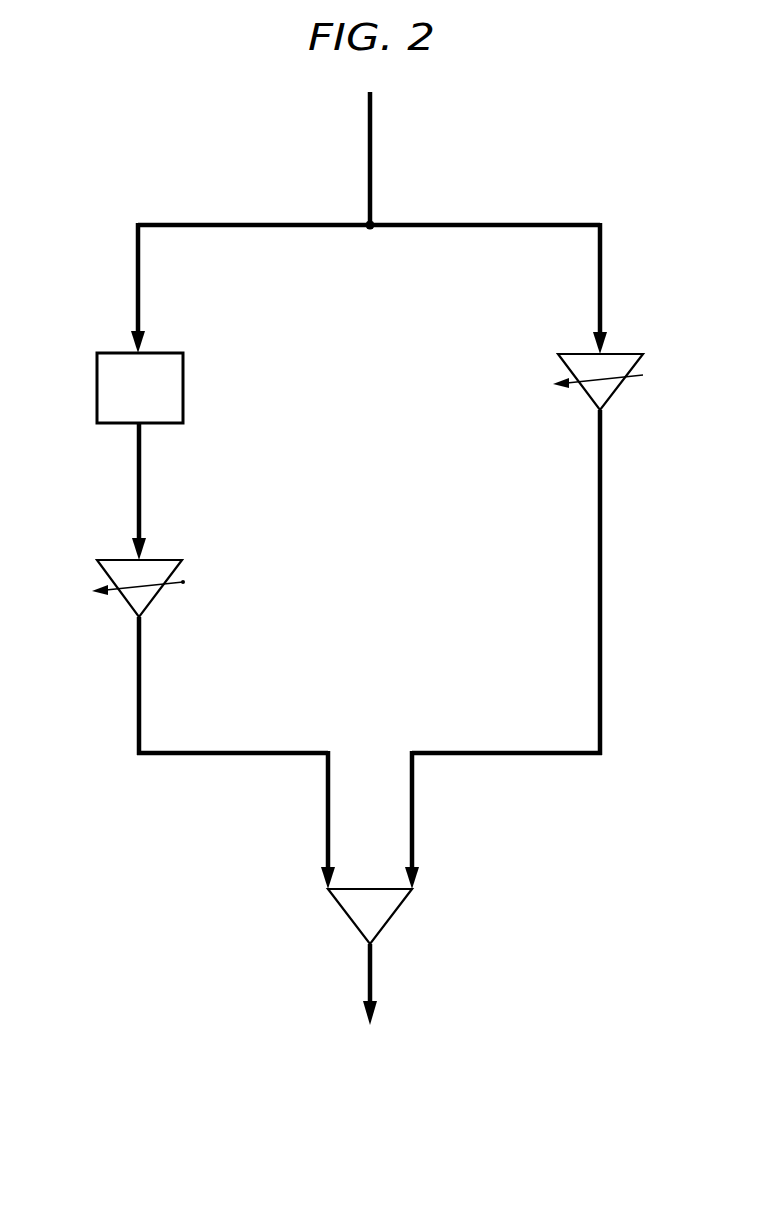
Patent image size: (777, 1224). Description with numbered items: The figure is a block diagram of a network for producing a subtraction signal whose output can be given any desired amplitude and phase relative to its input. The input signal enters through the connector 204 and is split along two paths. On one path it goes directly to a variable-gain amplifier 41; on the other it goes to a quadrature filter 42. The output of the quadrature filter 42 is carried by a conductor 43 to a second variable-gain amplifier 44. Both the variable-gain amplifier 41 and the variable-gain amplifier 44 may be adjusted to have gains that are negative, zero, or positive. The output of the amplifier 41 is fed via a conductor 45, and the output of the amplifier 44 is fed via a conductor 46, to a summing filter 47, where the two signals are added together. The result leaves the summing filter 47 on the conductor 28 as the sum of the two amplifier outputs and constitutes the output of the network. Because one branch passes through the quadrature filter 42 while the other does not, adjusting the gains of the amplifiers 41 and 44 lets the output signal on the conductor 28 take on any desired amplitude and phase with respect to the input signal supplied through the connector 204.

The connector 204 is at (370, 148).
The variable-gain amplifier 41 is at (560, 362).
The quadrature filter 42 is at (97, 376).
The conductor 43 is at (139, 484).
The variable-gain amplifier 44 is at (100, 568).
The conductor 45 is at (600, 484).
The conductor 46 is at (139, 684).
The summing filter 47 is at (331, 895).
The conductor 28 is at (370, 976).